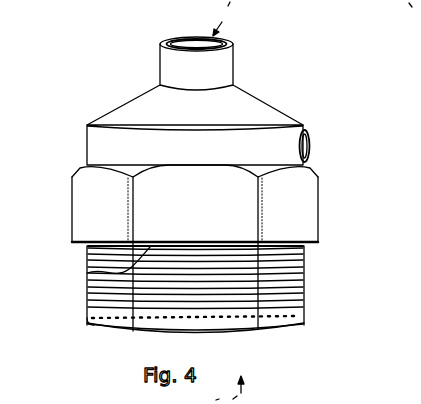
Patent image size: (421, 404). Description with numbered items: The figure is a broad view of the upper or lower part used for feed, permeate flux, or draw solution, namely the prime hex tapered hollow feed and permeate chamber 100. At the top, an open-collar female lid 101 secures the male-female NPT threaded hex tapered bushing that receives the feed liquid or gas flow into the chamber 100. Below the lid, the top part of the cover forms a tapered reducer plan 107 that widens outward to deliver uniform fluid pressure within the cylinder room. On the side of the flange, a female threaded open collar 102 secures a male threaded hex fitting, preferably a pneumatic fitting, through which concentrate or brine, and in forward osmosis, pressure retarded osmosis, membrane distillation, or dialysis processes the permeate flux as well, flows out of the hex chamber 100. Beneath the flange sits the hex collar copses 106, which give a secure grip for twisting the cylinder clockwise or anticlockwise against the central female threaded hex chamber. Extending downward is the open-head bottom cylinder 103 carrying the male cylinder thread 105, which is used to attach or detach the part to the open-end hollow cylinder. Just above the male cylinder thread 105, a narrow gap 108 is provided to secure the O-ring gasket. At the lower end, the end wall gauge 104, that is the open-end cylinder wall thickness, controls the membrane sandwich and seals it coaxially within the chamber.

The prime hex tapered hollow feed and permeate chamber 100 is at (218, 201).
The open-collar female lid 101 is at (197, 37).
The female threaded open collar 102 is at (311, 142).
The bottom cylinder 103 is at (175, 323).
The end wall gauge 104 is at (232, 328).
The male cylinder thread 105 is at (304, 270).
The hex collar copses 106 is at (319, 199).
The tapered reducer plan 107 is at (115, 107).
The narrow gap 108 is at (87, 273).